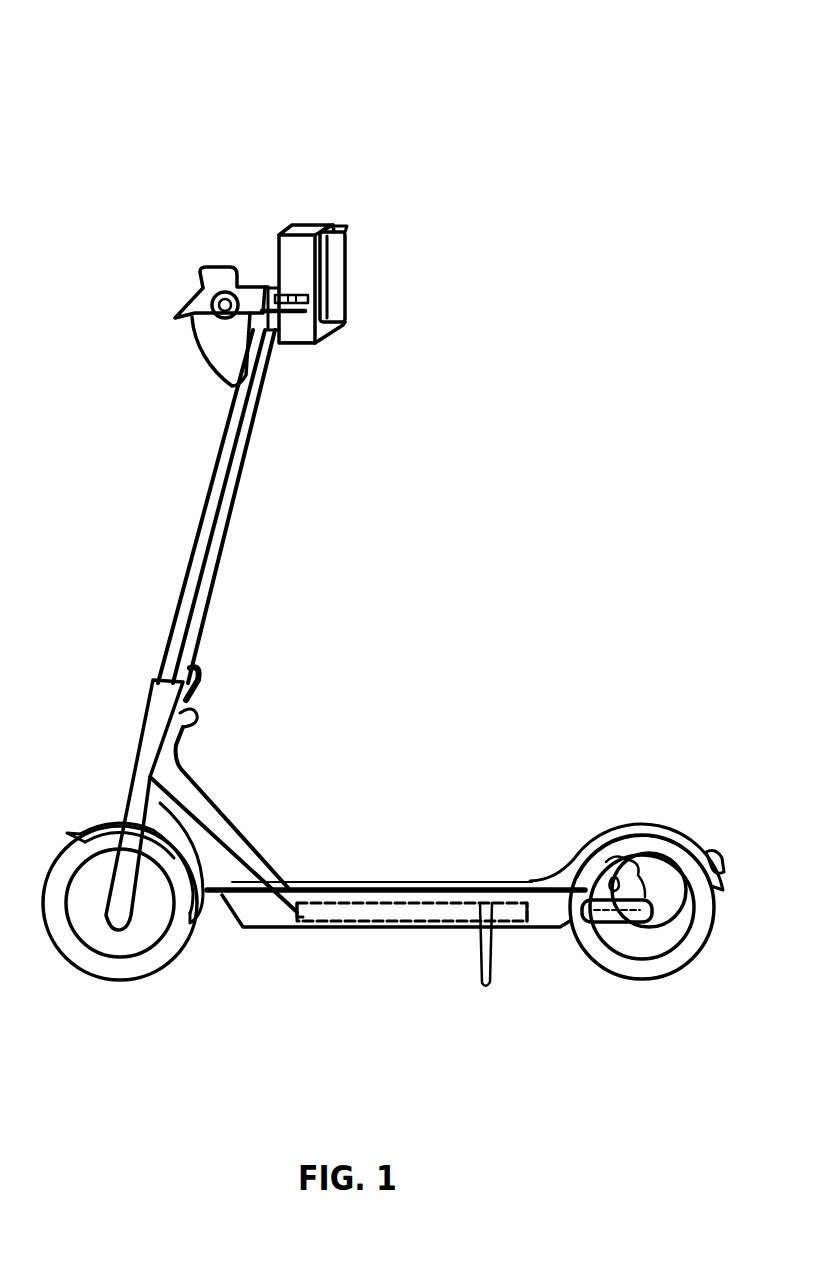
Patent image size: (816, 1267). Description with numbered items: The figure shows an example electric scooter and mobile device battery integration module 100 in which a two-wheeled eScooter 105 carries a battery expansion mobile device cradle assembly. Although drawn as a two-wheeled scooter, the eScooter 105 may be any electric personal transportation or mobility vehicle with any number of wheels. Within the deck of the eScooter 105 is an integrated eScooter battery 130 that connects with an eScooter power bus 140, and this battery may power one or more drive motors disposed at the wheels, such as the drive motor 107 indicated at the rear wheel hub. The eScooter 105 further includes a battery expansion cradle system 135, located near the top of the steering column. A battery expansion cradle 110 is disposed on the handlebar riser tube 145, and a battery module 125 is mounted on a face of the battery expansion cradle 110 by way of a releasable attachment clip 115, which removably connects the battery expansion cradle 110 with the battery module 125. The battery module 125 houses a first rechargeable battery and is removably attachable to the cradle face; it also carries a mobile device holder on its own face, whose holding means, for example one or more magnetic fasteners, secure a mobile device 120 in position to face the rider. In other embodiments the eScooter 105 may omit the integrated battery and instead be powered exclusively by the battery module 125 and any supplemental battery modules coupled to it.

The electric scooter 100 is at (727, 72).
The eScooter 105 is at (433, 880).
The rear wheel motor hub 107 is at (650, 897).
The battery expansion cradle 110 is at (277, 278).
The releasable attachment clip 115 is at (232, 390).
The mobile device 120 is at (347, 263).
The battery module 125 is at (313, 223).
The eScooter battery 130 is at (540, 876).
The battery expansion cradle system 135 is at (318, 370).
The eScooter power bus 140 is at (220, 507).
The handlebar riser tube 145 is at (206, 610).